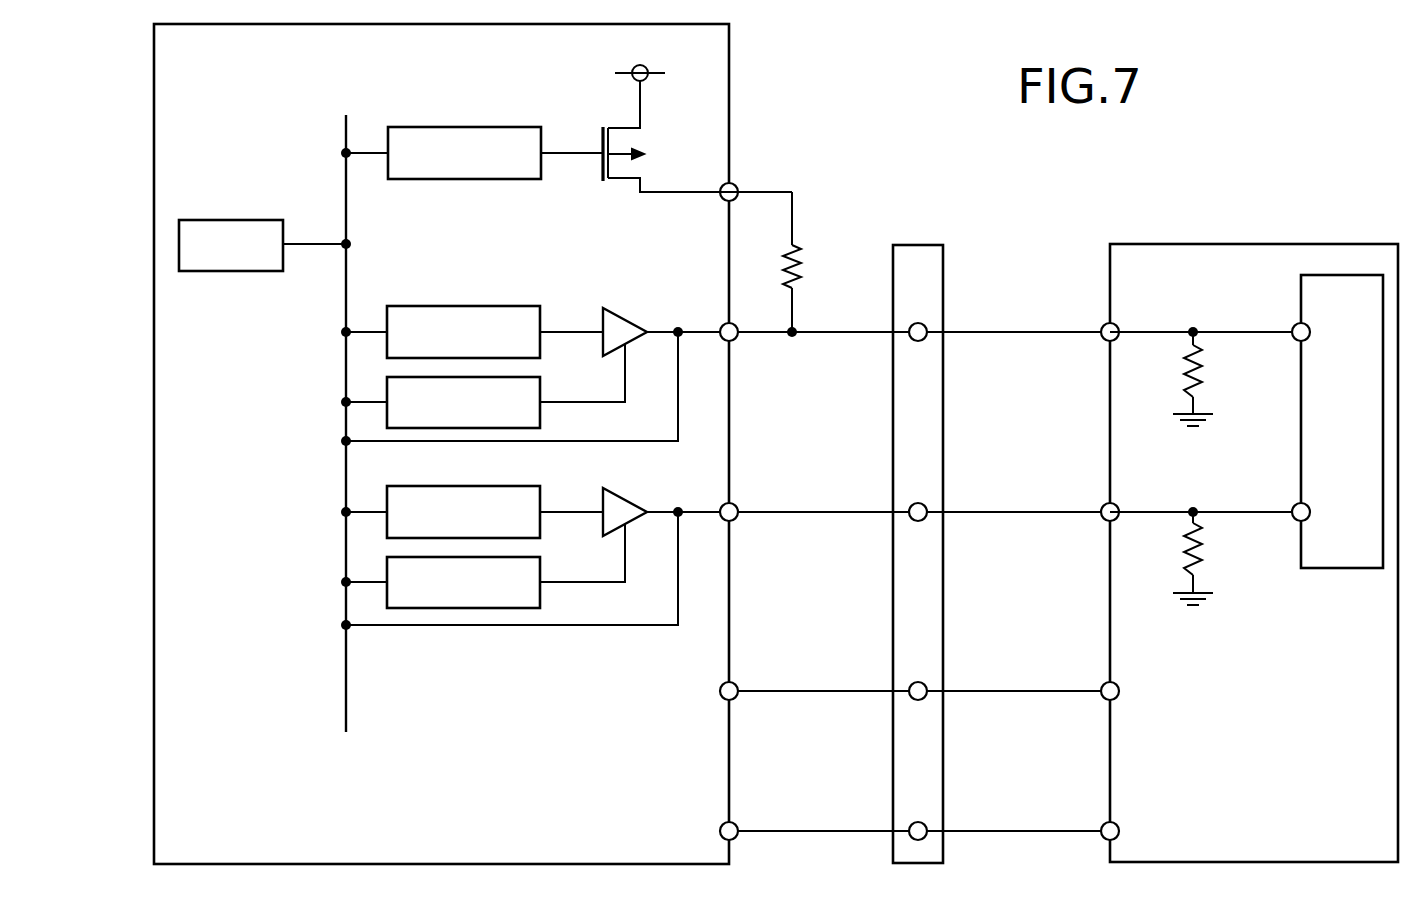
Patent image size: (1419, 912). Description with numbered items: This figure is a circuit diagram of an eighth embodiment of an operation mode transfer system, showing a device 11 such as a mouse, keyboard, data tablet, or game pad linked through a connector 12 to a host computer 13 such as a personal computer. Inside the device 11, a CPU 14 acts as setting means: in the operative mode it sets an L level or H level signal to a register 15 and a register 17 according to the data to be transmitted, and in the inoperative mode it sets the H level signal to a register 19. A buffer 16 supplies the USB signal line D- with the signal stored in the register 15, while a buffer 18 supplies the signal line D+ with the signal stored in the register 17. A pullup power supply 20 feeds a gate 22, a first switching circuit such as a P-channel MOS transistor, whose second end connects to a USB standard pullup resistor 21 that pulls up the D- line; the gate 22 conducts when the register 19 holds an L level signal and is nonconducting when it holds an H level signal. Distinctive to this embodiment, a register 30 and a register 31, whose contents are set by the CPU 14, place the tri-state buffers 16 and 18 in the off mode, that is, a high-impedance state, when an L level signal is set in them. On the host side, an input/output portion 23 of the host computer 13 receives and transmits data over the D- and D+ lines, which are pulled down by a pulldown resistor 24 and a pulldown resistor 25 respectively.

The device 11 is at (729, 75).
The connector 12 is at (918, 245).
The host computer 13 is at (1246, 244).
The CPU 14 is at (232, 220).
The register 15 is at (470, 306).
The buffer 16 is at (618, 312).
The register 17 is at (541, 494).
The buffer 18 is at (618, 492).
The register 19 is at (473, 127).
The pullup power supply 20 is at (632, 66).
The pullup resistor 21 is at (802, 263).
The gate 22 is at (623, 183).
The input/output portion 23 is at (1340, 568).
The pulldown resistor 24 is at (1210, 380).
The pulldown resistor 25 is at (1210, 558).
The register 30 is at (541, 391).
The register 31 is at (541, 567).